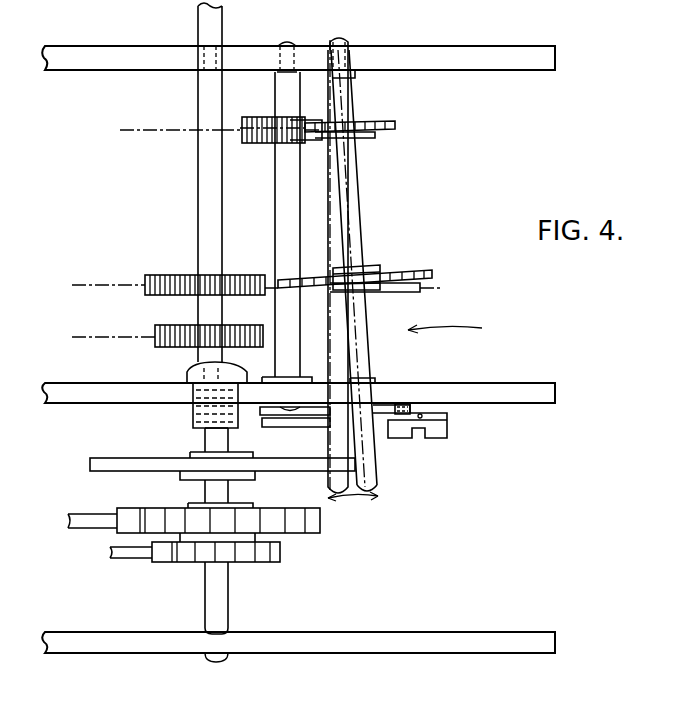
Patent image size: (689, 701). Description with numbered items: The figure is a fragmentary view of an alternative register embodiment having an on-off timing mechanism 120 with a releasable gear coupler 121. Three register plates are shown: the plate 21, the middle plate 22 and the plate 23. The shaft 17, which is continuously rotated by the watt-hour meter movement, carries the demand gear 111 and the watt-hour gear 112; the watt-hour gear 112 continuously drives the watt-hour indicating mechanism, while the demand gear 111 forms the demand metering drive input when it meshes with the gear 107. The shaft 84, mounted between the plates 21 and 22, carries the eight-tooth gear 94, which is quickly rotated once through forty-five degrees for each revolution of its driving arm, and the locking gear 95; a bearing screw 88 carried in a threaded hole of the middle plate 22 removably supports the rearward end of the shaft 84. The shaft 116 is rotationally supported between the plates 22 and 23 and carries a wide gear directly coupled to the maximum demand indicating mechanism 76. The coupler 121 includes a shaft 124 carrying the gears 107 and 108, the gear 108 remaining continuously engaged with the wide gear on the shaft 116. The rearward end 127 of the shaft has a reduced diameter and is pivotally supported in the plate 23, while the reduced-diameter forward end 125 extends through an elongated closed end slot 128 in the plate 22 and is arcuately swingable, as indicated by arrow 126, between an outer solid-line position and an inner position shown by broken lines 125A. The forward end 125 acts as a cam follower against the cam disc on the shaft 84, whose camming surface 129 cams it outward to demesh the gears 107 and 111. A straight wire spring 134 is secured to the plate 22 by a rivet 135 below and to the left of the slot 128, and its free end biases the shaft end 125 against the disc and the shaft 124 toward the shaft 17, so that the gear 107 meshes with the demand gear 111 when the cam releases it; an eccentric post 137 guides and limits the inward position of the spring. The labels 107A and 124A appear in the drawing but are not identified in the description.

The shaft 17 is at (200, 203).
The plate 21 is at (470, 654).
The middle plate 22 is at (436, 386).
The plate 23 is at (494, 47).
The maximum demand indicating mechanism 76 is at (148, 131).
The shaft 84 is at (226, 612).
The bearing screw 88 is at (188, 378).
The eight tooth gear 94 is at (278, 563).
The locking gear 95 is at (310, 534).
The gear 107 is at (408, 270).
The gear plate 107A is at (410, 292).
The gear 108 is at (397, 126).
The demand gear 111 is at (160, 274).
The watt-hour gear 112 is at (165, 324).
The shaft 116 is at (284, 213).
The on-off timing mechanism 120 is at (395, 560).
The releasable gear coupler 121 is at (461, 328).
The shaft 124 is at (360, 206).
The lever portion 124A is at (318, 161).
The forward end 125 is at (378, 473).
The inner position 125A is at (330, 479).
The arrow 126 is at (371, 500).
The rearward end 127 is at (345, 43).
The elongated closed end slot 128 is at (326, 412).
The camming surface 129 is at (263, 472).
The straight wire spring 134 is at (425, 417).
The rivet 135 is at (276, 429).
The eccentric post 137 is at (396, 405).